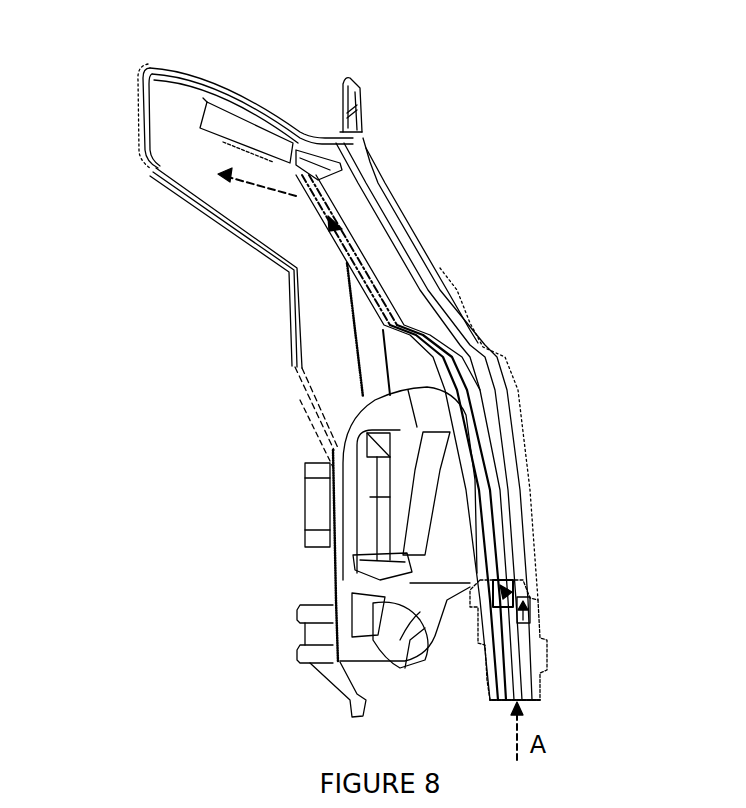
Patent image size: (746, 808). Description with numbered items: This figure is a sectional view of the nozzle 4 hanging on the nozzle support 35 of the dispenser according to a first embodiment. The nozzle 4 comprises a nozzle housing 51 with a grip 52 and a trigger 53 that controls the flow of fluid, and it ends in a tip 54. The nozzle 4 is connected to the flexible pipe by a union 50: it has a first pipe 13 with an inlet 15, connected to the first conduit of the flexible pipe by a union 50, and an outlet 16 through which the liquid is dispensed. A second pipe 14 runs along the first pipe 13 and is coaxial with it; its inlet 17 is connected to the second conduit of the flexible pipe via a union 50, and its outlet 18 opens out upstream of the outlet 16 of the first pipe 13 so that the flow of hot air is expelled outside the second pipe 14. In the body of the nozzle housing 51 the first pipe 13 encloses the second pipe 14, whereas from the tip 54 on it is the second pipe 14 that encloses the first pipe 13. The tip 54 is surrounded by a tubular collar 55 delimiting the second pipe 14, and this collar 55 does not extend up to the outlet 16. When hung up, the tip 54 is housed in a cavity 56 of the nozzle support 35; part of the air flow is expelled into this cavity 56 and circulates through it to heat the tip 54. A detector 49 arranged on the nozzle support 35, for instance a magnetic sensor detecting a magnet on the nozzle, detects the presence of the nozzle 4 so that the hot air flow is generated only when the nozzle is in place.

The nozzle 4 is at (515, 410).
The first pipe 13 is at (368, 235).
The second pipe 14 is at (420, 253).
The inlet 15 is at (522, 618).
The outlet 16 is at (185, 112).
The inlet 17 is at (503, 600).
The outlet 18 is at (370, 152).
The nozzle support 35 is at (137, 170).
The detector 49 is at (307, 513).
The union 50 is at (540, 690).
The nozzle housing 51 is at (574, 483).
The grip 52 is at (527, 563).
The trigger 53 is at (417, 480).
The tip 54 is at (232, 118).
The tubular collar 55 is at (440, 283).
The cavity 56 is at (208, 188).